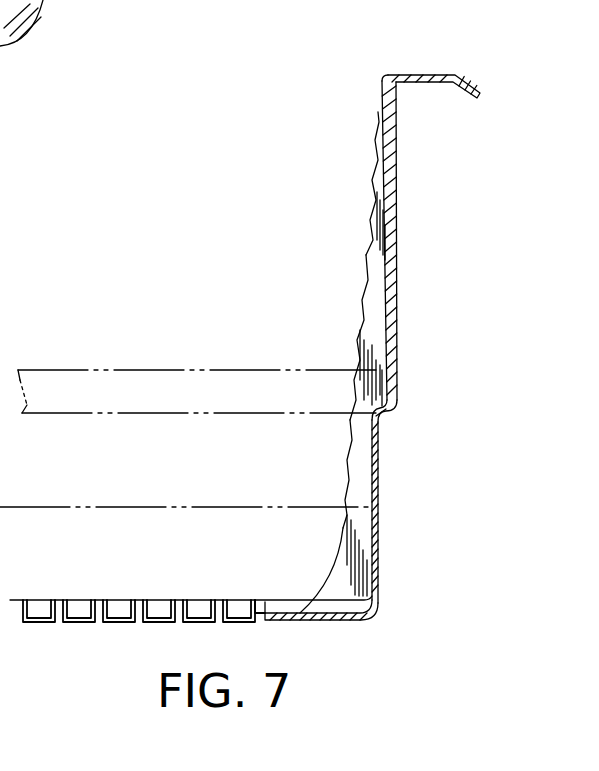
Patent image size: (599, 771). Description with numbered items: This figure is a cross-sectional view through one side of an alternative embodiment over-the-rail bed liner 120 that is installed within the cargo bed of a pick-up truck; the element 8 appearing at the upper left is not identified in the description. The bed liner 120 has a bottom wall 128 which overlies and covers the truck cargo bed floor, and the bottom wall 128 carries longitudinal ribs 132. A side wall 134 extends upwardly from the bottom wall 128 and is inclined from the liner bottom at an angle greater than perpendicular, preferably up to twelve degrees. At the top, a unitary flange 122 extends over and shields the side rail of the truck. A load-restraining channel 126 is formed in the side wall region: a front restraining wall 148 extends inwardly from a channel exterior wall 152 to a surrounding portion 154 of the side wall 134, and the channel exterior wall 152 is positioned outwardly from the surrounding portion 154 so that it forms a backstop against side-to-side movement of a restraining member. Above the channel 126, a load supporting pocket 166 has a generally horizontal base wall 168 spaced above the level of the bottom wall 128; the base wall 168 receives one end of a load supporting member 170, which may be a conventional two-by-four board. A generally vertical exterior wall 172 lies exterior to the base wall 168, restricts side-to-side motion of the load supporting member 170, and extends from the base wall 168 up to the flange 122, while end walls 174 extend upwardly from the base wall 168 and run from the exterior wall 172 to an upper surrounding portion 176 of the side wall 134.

The roller 8 is at (21, 62).
The over-the-rail bed liner 120 is at (278, 182).
The flange 122 is at (428, 76).
The load-restraining channel 126 is at (379, 554).
The bottom wall 128 is at (279, 620).
The longitudinal rib 132 is at (178, 624).
The side wall 134 is at (370, 188).
The front restraining wall 148 is at (345, 470).
The channel exterior wall 152 is at (380, 487).
The surrounding portion 154 is at (350, 442).
The load supporting pocket 166 is at (398, 282).
The pocket base wall 168 is at (381, 421).
The load supporting member 170 is at (124, 368).
The pocket exterior wall 172 is at (395, 338).
The end wall 174 is at (368, 252).
The upper surrounding portion 176 is at (372, 216).